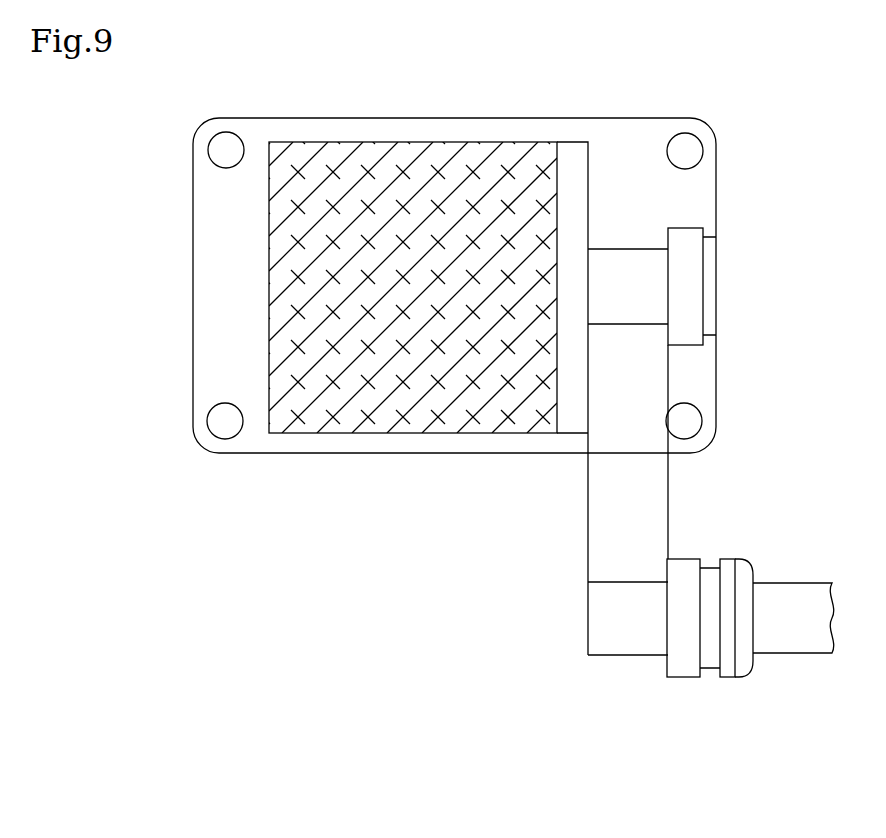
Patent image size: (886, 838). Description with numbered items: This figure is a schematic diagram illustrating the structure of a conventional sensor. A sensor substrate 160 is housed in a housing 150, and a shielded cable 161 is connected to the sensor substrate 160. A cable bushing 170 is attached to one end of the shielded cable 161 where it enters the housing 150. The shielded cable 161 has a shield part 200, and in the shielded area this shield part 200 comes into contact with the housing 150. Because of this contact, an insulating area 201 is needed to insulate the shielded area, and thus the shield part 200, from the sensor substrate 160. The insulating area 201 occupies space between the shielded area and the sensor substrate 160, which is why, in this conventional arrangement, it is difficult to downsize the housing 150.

The housing 150 is at (642, 128).
The sensor substrate 160 is at (403, 150).
The insulating area 201 is at (573, 162).
The shield part 200 is at (633, 640).
The cable bushing 170 is at (728, 665).
The shielded cable 161 is at (802, 620).